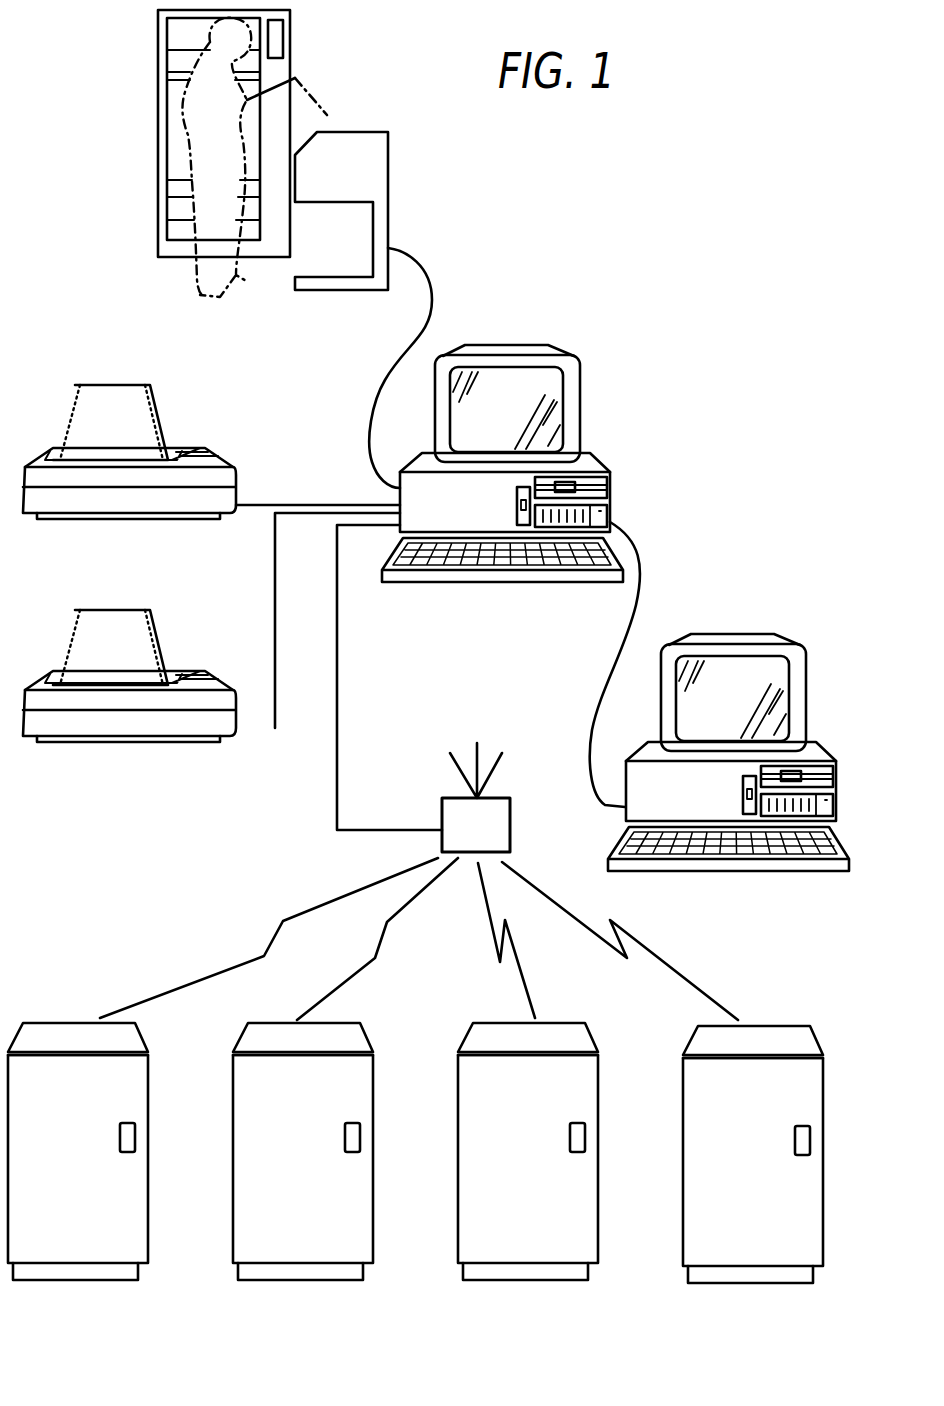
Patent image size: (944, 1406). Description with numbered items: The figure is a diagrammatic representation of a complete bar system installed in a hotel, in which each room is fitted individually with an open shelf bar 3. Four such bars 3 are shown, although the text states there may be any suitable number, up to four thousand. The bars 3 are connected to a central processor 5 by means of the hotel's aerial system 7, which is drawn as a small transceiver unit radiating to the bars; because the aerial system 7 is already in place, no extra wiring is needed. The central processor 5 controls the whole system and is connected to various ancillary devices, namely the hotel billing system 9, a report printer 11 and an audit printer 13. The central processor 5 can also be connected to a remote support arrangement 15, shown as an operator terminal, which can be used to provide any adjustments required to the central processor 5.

The bar 3 is at (85, 1178).
The central processor 5 is at (588, 463).
The aerial system 7 is at (452, 818).
The hotel billing system 9 is at (817, 748).
The report printer 11 is at (197, 477).
The audit printer 13 is at (183, 675).
The remote support arrangement 15 is at (347, 147).